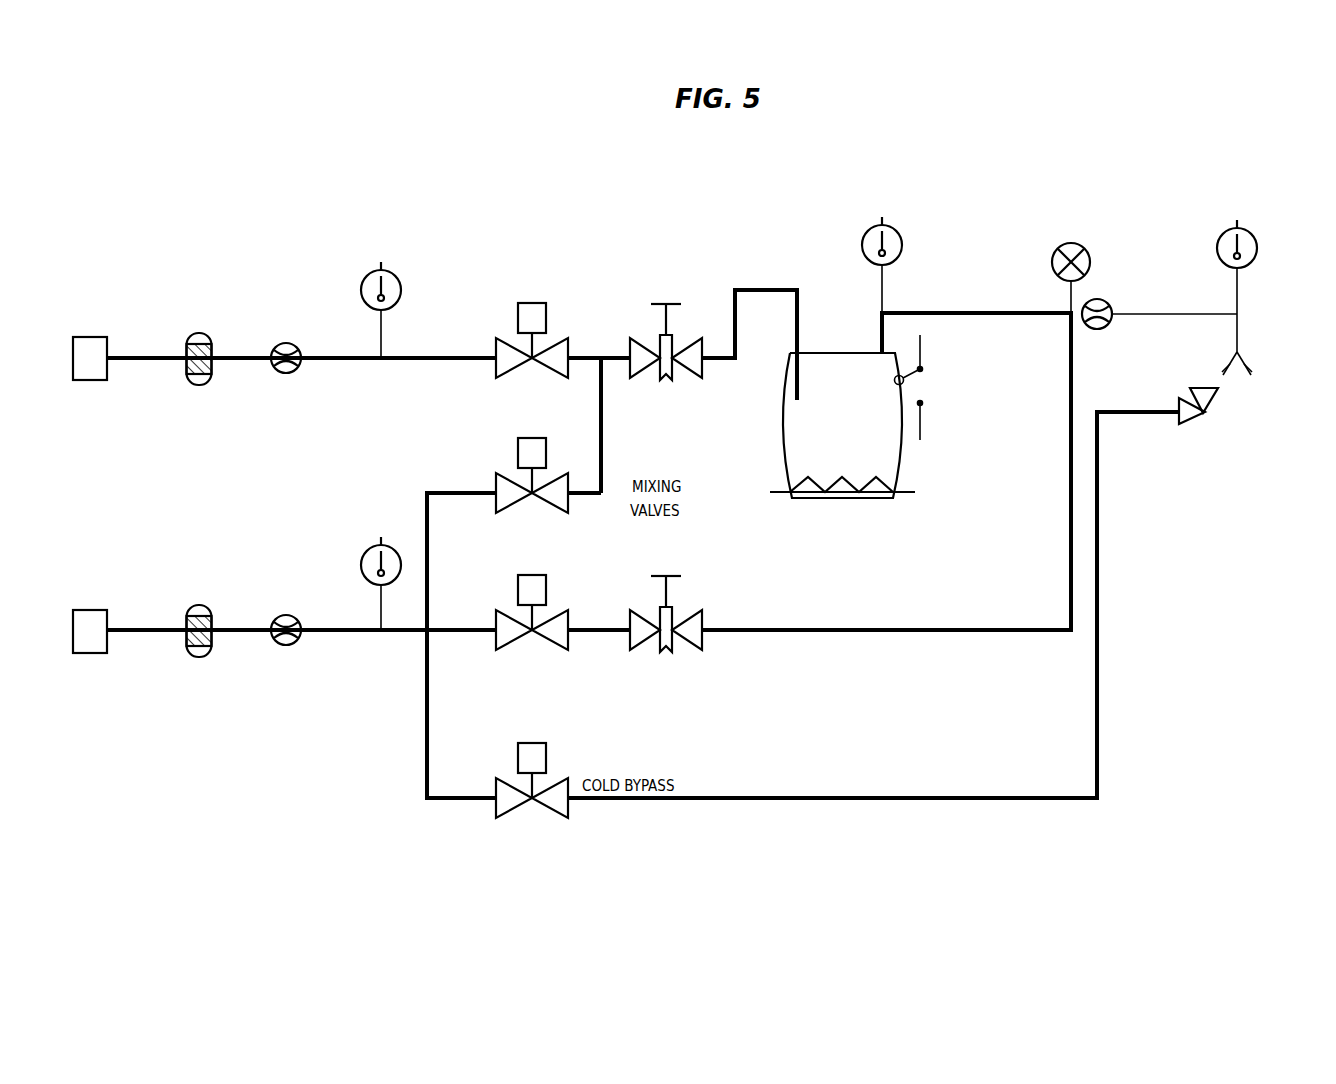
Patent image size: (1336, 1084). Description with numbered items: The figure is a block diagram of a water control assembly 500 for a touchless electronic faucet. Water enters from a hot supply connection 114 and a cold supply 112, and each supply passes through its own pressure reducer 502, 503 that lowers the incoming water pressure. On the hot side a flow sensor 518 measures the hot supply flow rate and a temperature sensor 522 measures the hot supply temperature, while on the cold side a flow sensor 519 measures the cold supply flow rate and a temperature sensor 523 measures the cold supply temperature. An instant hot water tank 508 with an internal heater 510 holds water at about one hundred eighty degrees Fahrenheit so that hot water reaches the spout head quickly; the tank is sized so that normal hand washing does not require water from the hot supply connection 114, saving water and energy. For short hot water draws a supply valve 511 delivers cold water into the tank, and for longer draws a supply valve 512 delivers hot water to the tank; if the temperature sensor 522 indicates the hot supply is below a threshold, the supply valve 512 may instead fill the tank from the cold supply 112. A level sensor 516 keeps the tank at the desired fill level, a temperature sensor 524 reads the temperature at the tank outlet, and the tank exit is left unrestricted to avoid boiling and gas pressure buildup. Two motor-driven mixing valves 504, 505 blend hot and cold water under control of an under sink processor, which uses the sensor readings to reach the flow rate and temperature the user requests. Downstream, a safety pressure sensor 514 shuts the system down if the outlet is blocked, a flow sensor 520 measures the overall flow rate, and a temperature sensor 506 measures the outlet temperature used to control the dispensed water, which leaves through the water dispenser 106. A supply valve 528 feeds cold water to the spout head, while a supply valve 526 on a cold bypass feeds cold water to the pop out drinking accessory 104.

The water control assembly 500 is at (1005, 130).
The hot supply connection 114 is at (100, 350).
The cold supply 112 is at (94, 624).
The pressure reducer 502 is at (212, 380).
The pressure reducer 503 is at (200, 657).
The flow sensor 518 is at (280, 344).
The flow sensor 519 is at (284, 616).
The flow sensor 520 is at (1110, 302).
The temperature sensor 522 is at (362, 283).
The temperature sensor 523 is at (362, 558).
The temperature sensor 524 is at (862, 243).
The temperature sensor 506 is at (1258, 245).
The safety pressure sensor 514 is at (1052, 262).
The supply valve 511 is at (500, 340).
The supply valve 512 is at (528, 448).
The supply valve 528 is at (560, 640).
The supply valve 526 is at (562, 806).
The mixing valve 504 is at (650, 340).
The mixing valve 505 is at (700, 640).
The instant hot water tank 508 is at (781, 430).
The internal heater 510 is at (815, 500).
The level sensor 516 is at (920, 418).
The pop out drinking accessory 104 is at (1186, 392).
The water dispenser 106 is at (1250, 368).